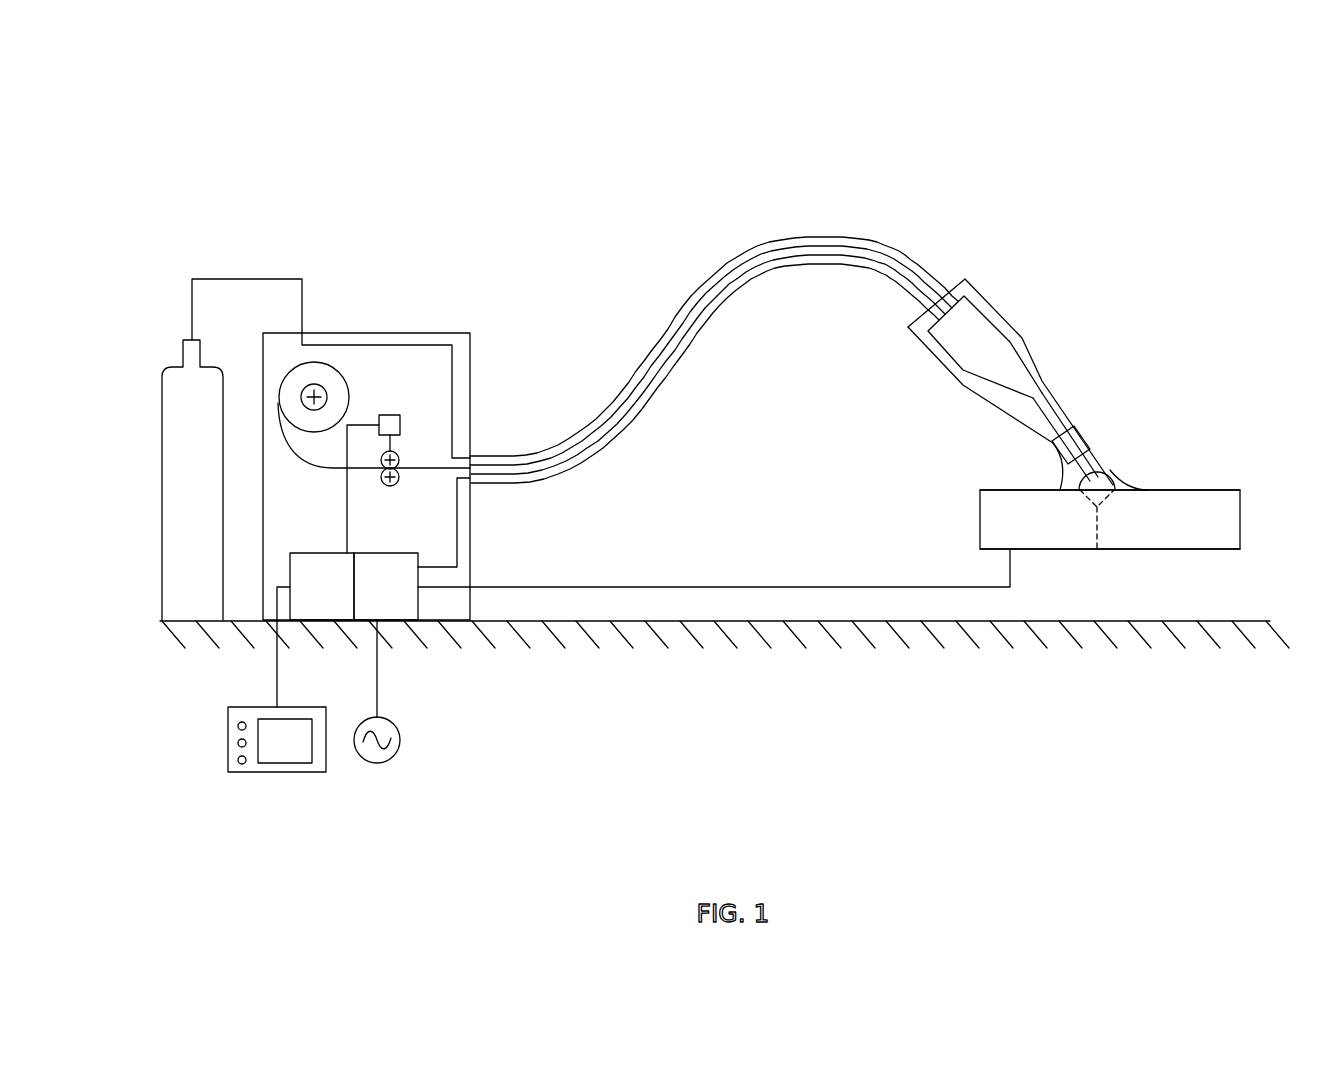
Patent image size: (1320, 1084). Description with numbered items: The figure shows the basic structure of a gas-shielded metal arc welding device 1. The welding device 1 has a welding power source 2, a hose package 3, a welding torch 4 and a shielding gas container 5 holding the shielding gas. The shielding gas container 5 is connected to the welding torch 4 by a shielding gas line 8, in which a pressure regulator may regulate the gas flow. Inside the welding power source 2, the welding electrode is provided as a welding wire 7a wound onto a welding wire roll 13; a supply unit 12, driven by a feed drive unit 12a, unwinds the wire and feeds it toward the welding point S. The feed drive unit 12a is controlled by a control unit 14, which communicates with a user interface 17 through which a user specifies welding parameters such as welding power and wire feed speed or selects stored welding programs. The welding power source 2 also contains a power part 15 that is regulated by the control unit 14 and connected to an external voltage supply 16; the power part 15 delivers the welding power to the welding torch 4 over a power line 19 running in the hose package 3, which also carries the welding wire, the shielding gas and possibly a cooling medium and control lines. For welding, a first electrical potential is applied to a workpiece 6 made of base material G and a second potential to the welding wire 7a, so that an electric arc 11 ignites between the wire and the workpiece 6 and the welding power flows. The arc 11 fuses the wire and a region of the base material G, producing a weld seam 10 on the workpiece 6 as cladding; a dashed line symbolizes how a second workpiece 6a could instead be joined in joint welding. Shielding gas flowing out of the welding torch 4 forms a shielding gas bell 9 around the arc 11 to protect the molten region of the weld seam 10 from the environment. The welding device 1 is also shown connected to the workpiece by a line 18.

The gas-shielded metal arc welding (GSMAW) device 1 is at (333, 126).
The welding power source 2 is at (419, 327).
The hose package 3 is at (699, 282).
The welding torch 4 is at (1006, 351).
The shielding gas container 5 is at (187, 432).
The workpiece 6 is at (1218, 520).
The workpiece 6a is at (1000, 519).
The welding wire 7a is at (308, 469).
The shielding gas line 8 is at (240, 279).
The shielding gas bell 9 is at (1090, 447).
The weld seam 10 is at (1078, 485).
The electric arc 11 is at (1057, 461).
The supply unit 12 is at (410, 486).
The feed drive unit 12a is at (390, 415).
The welding wire roll 13 is at (319, 370).
The control unit 14 is at (305, 569).
The power part 15 is at (390, 590).
The external voltage supply 16 is at (374, 781).
The user interface 17 is at (278, 781).
The ground cable 18 is at (600, 587).
The power line 19 is at (963, 347).
The welding point S is at (1117, 503).
The base material G is at (1222, 550).